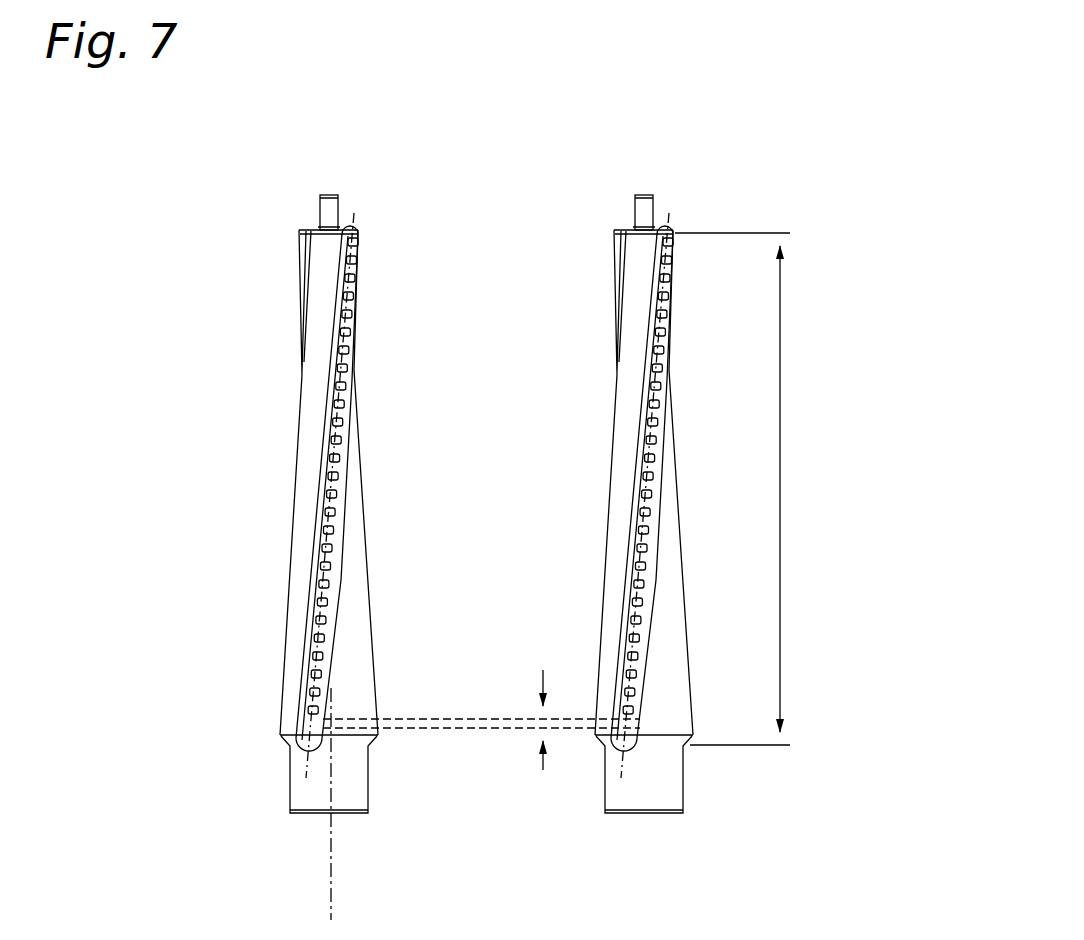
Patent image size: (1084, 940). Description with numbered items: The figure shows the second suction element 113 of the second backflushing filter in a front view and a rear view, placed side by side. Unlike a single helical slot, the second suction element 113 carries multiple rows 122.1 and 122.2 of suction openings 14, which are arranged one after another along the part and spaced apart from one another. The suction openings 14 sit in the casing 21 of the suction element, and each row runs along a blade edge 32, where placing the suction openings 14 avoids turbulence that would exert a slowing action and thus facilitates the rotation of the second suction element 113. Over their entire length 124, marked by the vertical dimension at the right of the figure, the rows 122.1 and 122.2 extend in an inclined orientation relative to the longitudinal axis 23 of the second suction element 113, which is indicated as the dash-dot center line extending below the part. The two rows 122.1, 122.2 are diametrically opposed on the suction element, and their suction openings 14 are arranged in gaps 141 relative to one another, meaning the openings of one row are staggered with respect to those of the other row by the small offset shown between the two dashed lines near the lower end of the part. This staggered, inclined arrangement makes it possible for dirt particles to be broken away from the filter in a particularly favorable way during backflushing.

The second suction element 113 is at (333, 204).
The blade edge 32 is at (342, 315).
The casing 21 is at (308, 498).
The suction openings 14 is at (325, 568).
The entire length 124 is at (780, 498).
The gaps 141 is at (543, 683).
The first row of suction openings 122.1 is at (306, 768).
The second row of suction openings 122.2 is at (623, 763).
The longitudinal axis 23 is at (331, 868).